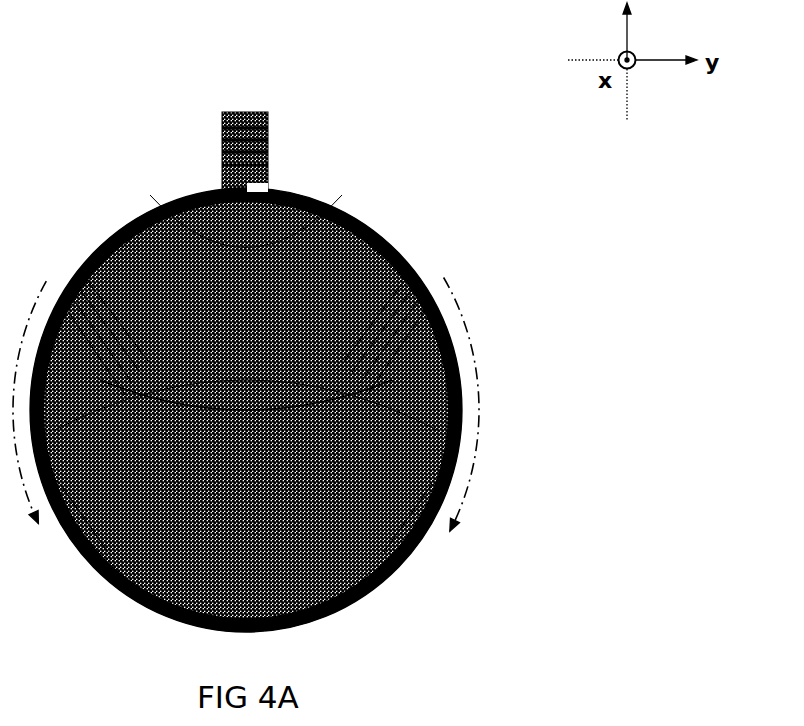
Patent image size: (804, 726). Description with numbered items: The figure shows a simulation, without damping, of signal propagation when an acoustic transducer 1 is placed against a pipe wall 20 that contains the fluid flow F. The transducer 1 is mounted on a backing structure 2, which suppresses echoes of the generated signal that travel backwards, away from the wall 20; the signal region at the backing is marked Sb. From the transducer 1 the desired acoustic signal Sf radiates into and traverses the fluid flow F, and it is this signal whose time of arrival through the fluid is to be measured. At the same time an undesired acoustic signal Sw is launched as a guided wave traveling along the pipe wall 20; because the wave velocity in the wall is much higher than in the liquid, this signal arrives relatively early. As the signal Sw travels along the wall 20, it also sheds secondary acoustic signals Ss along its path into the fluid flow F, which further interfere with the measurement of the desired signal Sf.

The pipe wall 20 is at (377, 235).
The backing structure 2 is at (250, 140).
The acoustic transducer 1 is at (224, 184).
The bending wave in actuator Sb is at (224, 116).
The desired acoustic signal Sf is at (120, 360).
The secondary acoustic signals Ss is at (80, 432).
The undesired acoustic signal Sw is at (76, 509).
The fluid flow F is at (260, 479).